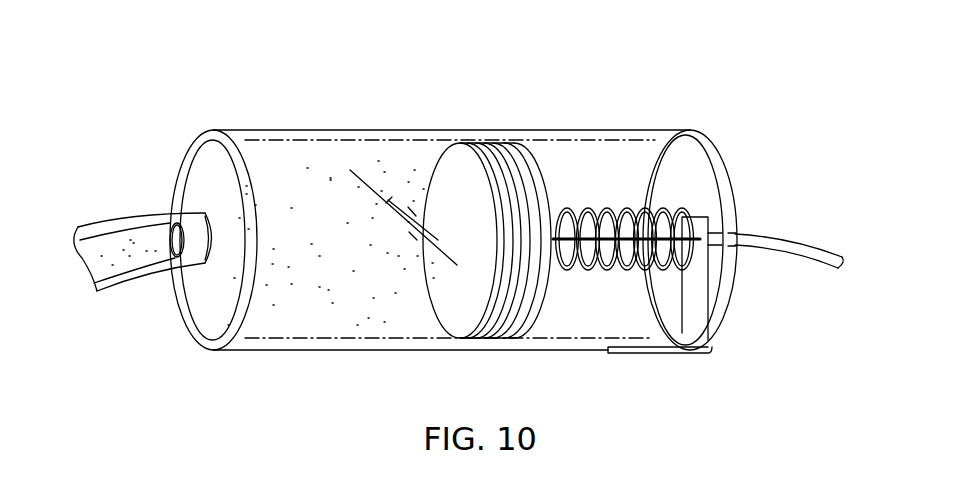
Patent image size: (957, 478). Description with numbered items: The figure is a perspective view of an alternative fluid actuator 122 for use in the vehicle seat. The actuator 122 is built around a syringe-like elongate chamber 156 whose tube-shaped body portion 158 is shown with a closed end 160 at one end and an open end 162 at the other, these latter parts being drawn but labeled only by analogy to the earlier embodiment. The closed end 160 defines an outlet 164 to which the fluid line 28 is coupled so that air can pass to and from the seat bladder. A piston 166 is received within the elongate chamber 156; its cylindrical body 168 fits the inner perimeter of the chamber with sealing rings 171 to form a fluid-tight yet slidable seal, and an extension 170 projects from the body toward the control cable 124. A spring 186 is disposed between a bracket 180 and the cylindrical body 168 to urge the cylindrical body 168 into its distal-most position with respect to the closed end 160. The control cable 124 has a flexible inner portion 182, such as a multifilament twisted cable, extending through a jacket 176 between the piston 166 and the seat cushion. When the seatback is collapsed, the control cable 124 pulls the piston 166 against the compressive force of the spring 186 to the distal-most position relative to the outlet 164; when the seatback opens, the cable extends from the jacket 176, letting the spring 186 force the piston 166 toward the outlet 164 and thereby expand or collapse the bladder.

The actuator 122 is at (396, 97).
The cylinder wall 158 is at (293, 135).
The elongate chamber 156 is at (279, 348).
The closed end 160 is at (192, 175).
The fluid line 28 is at (116, 228).
The outlet 164 is at (173, 250).
The piston 166 is at (509, 150).
The piston seal rings 171 is at (482, 340).
The cylindrical body 168 is at (537, 303).
The spring 170 is at (575, 207).
The flexible inner portion 182 is at (626, 235).
The spring 186 is at (630, 268).
The bracket 180 is at (710, 352).
The second end cap 162 is at (738, 174).
The control cable 124 is at (750, 214).
The jacket 176 is at (818, 250).